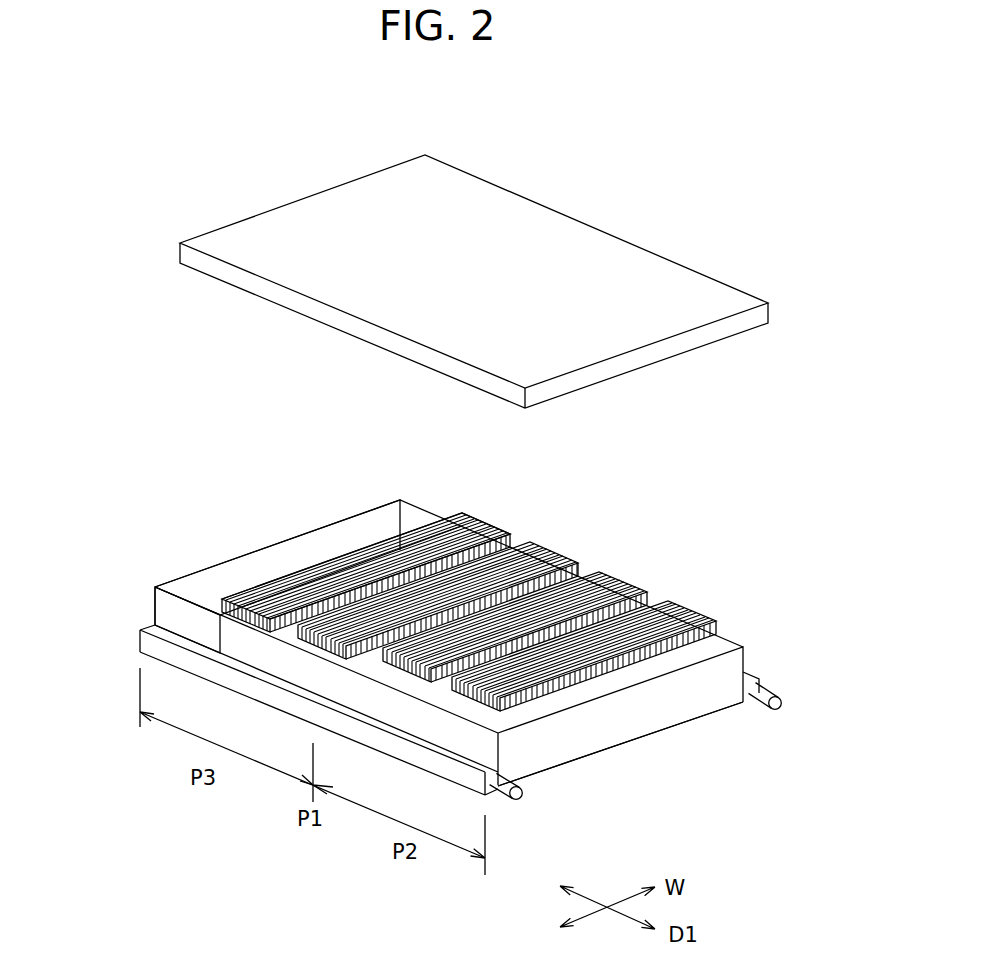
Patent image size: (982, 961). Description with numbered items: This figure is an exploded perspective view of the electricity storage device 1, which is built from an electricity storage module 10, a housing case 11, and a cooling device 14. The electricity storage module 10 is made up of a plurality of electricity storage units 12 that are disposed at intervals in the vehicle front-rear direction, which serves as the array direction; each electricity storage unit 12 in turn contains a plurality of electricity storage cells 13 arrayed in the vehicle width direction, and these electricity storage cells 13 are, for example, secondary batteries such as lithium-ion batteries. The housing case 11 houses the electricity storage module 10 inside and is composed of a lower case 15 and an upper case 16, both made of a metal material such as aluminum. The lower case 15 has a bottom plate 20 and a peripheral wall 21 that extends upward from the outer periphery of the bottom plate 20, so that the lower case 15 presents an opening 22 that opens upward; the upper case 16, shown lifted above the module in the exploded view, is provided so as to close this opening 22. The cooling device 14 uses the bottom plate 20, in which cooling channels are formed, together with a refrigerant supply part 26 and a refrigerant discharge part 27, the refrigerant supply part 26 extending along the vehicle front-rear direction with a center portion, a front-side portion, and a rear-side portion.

The electricity storage device 1 is at (544, 181).
The electricity storage module 10 is at (659, 515).
The housing case 11 is at (370, 195).
The electricity storage unit 12 is at (458, 525).
The electricity storage cell 13 is at (362, 578).
The cooling device 14 is at (618, 806).
The lower case 15 is at (653, 727).
The upper case 16 is at (654, 349).
The bottom plate 20 is at (567, 767).
The peripheral wall 21 is at (170, 609).
The opening 22 is at (270, 548).
The refrigerant supply part 26 is at (408, 764).
The refrigerant discharge part 27 is at (740, 703).